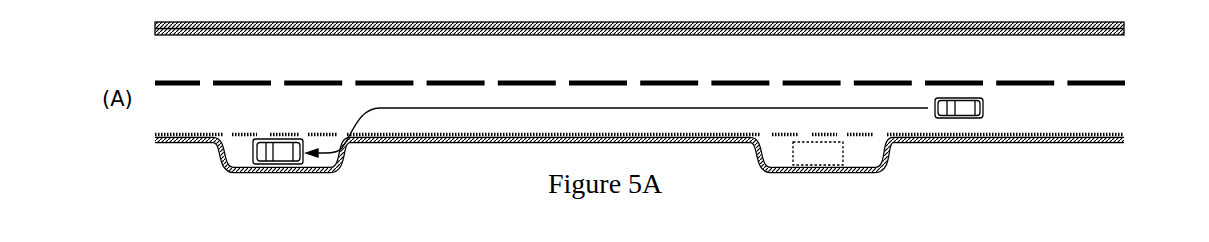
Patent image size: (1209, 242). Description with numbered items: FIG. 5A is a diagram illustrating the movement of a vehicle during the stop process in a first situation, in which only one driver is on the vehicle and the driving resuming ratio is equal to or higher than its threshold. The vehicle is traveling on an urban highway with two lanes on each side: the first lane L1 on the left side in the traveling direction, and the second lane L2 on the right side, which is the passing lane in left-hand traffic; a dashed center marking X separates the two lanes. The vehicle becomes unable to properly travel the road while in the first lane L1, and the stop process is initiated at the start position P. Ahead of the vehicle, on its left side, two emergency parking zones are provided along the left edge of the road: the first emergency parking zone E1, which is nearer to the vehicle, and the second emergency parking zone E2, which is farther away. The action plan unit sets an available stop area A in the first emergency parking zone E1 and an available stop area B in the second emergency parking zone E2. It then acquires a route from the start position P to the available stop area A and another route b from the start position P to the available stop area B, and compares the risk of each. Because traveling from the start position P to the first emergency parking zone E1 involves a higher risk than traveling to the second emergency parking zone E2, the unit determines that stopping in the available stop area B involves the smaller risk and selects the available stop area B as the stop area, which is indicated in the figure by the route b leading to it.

The second lane L2 is at (193, 52).
The first lane L1 is at (192, 108).
The lane center line X is at (1128, 74).
The available stop area B is at (264, 166).
The second emergency parking zone E2 is at (318, 173).
The first emergency parking zone E1 is at (845, 173).
The route b is at (432, 110).
The available stop area A is at (803, 166).
The start position P is at (962, 120).